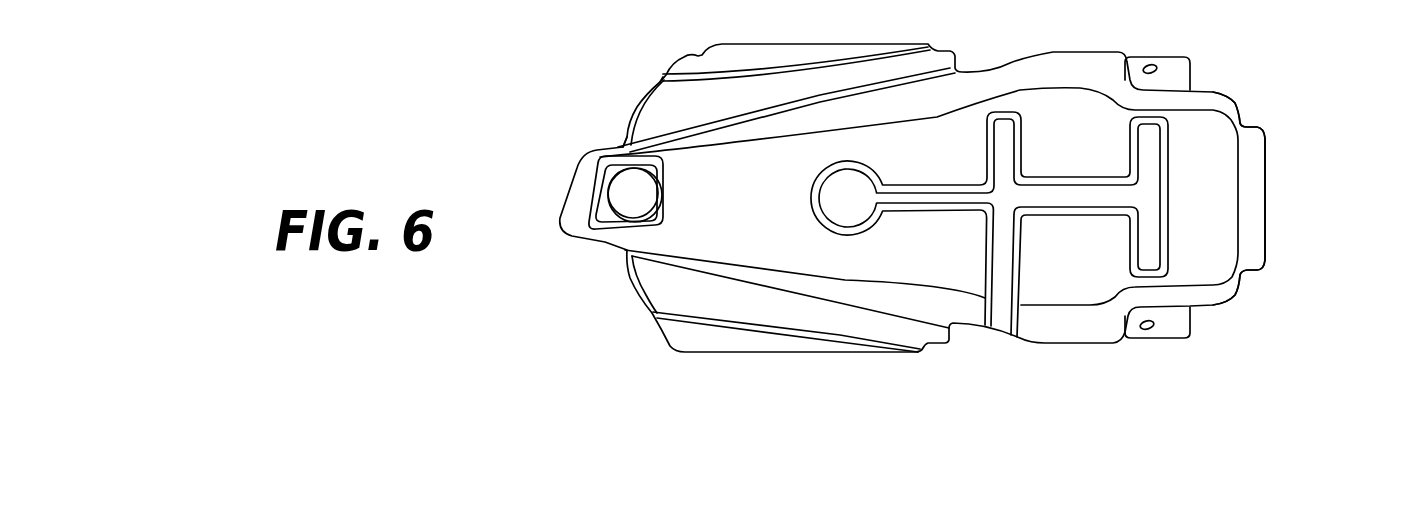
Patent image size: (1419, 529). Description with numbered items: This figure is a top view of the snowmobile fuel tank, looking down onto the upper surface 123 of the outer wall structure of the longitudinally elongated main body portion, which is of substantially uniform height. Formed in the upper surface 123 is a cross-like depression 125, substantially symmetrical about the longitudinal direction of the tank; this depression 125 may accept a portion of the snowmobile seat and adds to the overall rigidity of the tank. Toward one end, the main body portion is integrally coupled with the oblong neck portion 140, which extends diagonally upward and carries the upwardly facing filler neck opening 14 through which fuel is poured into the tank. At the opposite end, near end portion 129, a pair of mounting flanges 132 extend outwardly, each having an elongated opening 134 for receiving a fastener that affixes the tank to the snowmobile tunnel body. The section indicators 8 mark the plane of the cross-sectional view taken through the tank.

The section line 8- 8 is at (487, 153).
The filler neck opening 14 is at (625, 193).
The upper surface 123 is at (942, 120).
The cross-like depression 125 is at (1008, 132).
The end portion 129 is at (1257, 192).
The mounting flange 132 is at (1184, 72).
The elongated opening 134 is at (1153, 66).
The oblong neck portion 140 is at (678, 135).